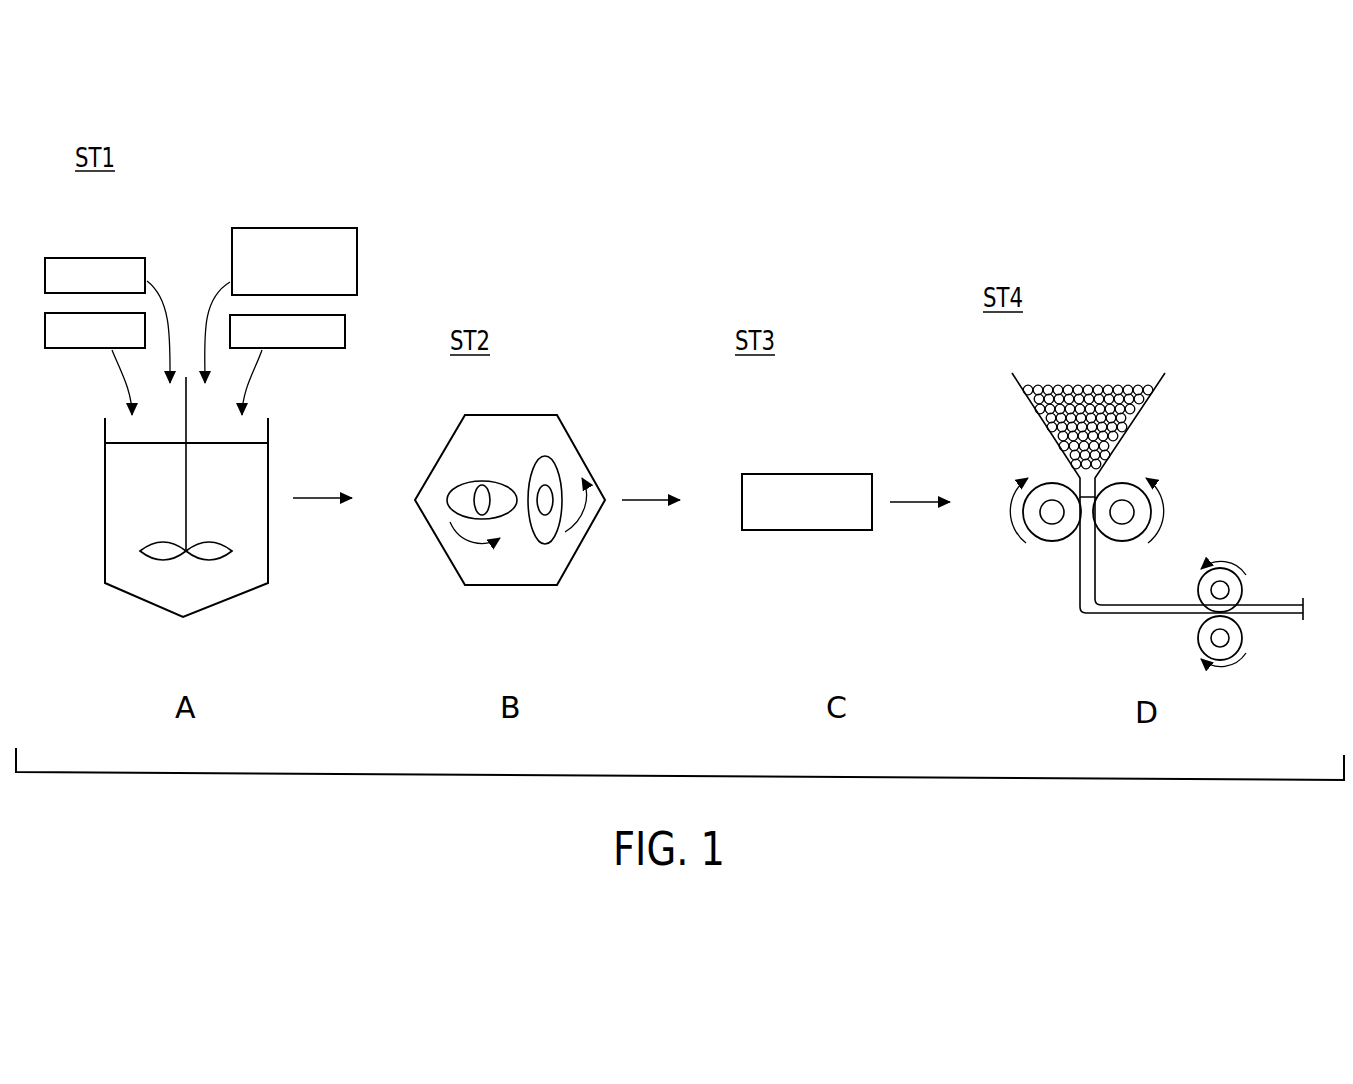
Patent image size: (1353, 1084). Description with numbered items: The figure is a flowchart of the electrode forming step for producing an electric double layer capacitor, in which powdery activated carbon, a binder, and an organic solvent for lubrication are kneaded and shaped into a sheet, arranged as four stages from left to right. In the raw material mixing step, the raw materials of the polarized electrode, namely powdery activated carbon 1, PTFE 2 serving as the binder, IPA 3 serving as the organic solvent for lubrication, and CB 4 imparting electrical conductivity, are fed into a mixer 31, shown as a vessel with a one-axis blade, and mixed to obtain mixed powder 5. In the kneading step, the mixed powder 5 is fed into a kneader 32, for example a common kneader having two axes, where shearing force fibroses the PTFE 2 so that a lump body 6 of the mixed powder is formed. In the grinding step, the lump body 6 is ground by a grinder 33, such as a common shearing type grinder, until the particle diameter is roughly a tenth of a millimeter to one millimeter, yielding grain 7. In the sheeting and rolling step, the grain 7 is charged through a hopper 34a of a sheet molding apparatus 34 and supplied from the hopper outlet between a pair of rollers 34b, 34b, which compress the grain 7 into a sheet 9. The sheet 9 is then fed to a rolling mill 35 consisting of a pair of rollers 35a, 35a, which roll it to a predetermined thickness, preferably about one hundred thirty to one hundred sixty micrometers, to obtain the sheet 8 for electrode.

The powdery activated carbon 1 is at (309, 228).
The poly fluoridation ethylene (PTFE) 2 is at (80, 350).
The isopropyl alcohol (IPA) 3 is at (309, 350).
The carbon black (CB) 4 is at (104, 257).
The mixed powder 5 is at (232, 588).
The mixer 31 is at (280, 448).
The kneader 32 is at (541, 406).
The lump body 6 is at (557, 564).
The grinder 33 is at (840, 464).
The grain 7 is at (1098, 389).
The hopper 34a is at (1165, 376).
The sheet molding apparatus 34 is at (1183, 472).
The pair of rollers 34b is at (1052, 541).
The sheet 9 is at (1085, 617).
The rolling mill 35 is at (1245, 545).
The pair of rollers 35a is at (1238, 633).
The sheet for electrode 8 is at (1285, 612).